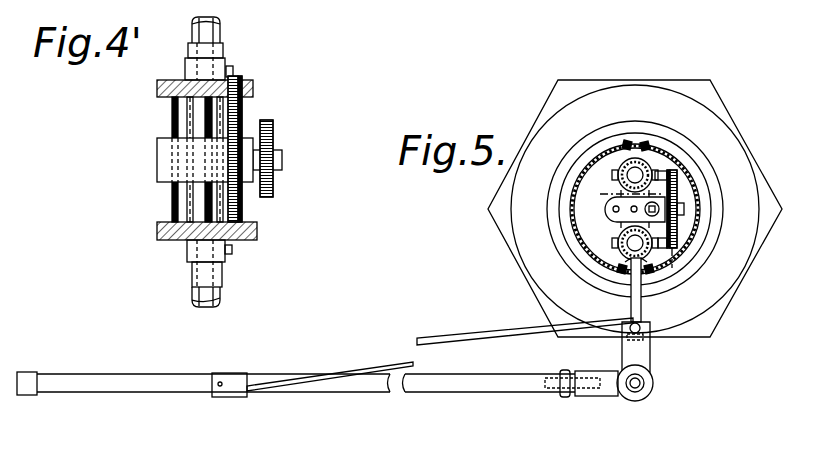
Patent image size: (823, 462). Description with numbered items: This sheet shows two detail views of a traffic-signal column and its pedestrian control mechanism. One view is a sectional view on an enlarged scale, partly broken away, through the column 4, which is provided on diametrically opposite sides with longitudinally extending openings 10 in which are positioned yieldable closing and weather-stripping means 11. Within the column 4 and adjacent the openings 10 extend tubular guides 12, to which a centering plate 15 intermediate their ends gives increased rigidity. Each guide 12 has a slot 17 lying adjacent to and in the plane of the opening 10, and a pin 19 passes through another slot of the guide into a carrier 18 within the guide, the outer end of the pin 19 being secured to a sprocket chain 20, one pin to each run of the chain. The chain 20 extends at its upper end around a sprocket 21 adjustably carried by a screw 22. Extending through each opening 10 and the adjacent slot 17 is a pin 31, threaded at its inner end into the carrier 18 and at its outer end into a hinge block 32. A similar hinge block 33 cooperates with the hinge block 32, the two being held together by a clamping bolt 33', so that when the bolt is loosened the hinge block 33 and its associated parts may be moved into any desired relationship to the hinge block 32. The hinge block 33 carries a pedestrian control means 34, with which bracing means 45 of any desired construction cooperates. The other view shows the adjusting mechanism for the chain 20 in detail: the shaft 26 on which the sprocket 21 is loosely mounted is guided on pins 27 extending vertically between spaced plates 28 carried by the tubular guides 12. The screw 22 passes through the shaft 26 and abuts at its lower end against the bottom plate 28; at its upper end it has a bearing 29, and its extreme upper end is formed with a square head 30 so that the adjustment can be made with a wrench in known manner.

In FIG. 4', the carrier 18 is at (215, 28).
In FIG. 5, the carrier 18 is at (653, 168).
In FIG. 4', the tubular guides 12 is at (222, 50).
In FIG. 5, the tubular guides 12 is at (617, 180).
In FIG. 4', the square head 30 is at (236, 66).
In FIG. 5, the square head 30 is at (684, 212).
In FIG. 4', the bearing 29 is at (253, 86).
In FIG. 5, the bearing 29 is at (617, 222).
In FIG. 4', the screw 22 is at (241, 111).
In FIG. 4', the pins 27 is at (205, 112).
In FIG. 4', the sprocket 21 is at (273, 131).
In FIG. 5, the sprocket 21 is at (679, 206).
In FIG. 4', the shaft 26 is at (158, 165).
In FIG. 4', the plates 28 is at (257, 231).
In FIG. 5, the yieldable closing and weather-stripping means 11 is at (630, 140).
In FIG. 5, the second slot 17 is at (628, 163).
In FIG. 5, the pin 19 is at (672, 172).
In FIG. 5, the column 4 is at (681, 198).
In FIG. 5, the sprocket chain 20 is at (673, 233).
In FIG. 5, the centering plate 15 is at (687, 237).
In FIG. 5, the openings 10 is at (646, 272).
In FIG. 5, the pin 31 is at (630, 284).
In FIG. 5, the bracing means 45 is at (462, 334).
In FIG. 5, the hinge block 32 is at (651, 360).
In FIG. 5, the hinge block 33 is at (592, 402).
In FIG. 5, the clamping bolt 33' is at (660, 400).
In FIG. 5, the pedestrian control means 34 is at (327, 385).